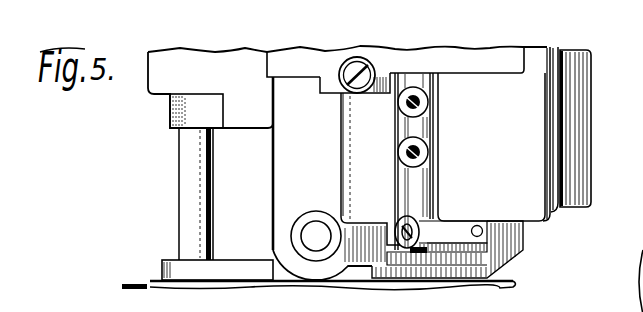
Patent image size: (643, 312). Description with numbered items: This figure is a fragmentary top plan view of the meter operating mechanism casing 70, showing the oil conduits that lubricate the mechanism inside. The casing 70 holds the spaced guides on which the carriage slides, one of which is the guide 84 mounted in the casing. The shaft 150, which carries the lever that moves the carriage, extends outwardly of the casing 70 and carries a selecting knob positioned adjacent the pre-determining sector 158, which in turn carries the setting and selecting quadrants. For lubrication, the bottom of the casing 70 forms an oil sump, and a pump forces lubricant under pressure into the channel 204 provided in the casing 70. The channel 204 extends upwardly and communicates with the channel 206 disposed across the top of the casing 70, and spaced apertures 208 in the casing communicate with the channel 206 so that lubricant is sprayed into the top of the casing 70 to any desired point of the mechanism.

The casing 70 is at (538, 122).
The guide 84 is at (315, 221).
The shaft 150 is at (188, 155).
The pre-determining sector 158 is at (507, 281).
The channel 204 is at (478, 226).
The channel 206 is at (420, 177).
The apertures 208 is at (430, 133).